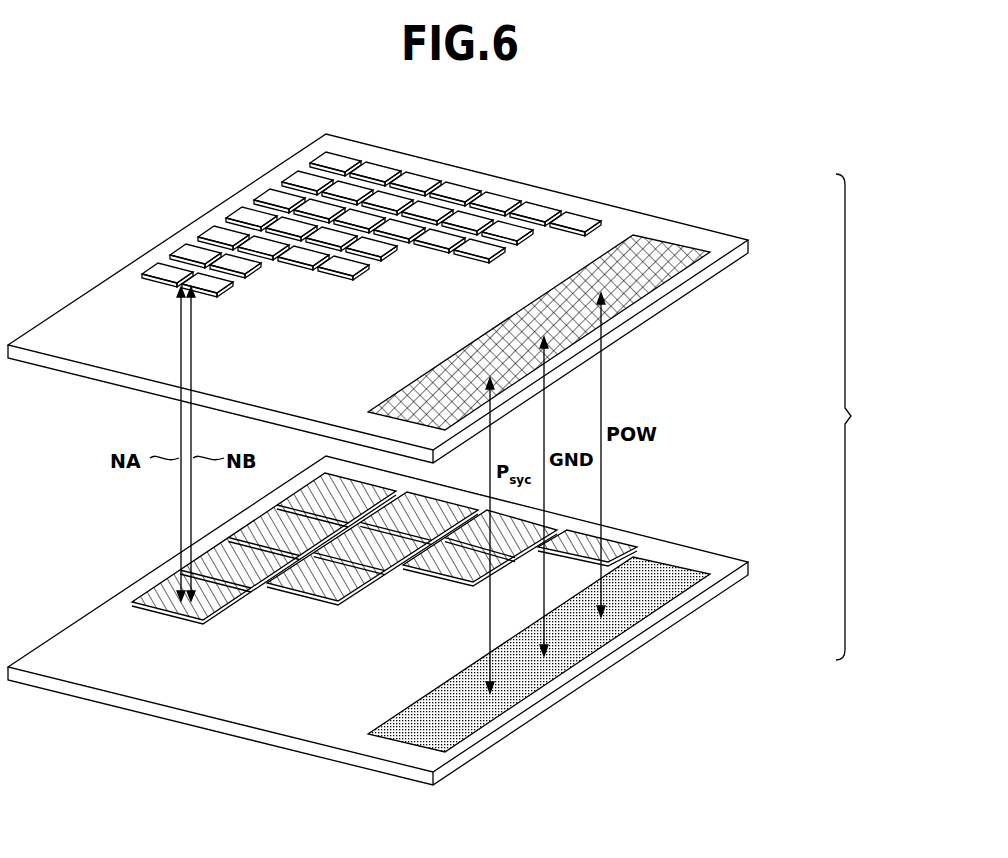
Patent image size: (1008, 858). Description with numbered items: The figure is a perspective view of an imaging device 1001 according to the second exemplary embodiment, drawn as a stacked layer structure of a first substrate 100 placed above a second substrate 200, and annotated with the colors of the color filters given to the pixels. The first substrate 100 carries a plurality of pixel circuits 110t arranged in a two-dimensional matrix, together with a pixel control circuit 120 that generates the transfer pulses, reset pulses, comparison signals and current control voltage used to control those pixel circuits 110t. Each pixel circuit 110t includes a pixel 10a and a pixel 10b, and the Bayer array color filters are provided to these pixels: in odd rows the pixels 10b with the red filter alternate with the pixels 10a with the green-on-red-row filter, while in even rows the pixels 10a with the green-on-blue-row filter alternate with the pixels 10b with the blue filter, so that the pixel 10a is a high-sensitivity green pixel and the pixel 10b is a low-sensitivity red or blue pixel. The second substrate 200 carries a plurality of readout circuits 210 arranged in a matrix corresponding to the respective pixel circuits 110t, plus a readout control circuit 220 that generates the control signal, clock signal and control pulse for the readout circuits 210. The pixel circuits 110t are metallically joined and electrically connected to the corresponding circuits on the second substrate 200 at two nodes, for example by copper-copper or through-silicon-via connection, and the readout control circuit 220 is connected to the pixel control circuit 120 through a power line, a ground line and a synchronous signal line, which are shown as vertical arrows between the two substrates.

The first substrate 100 is at (748, 241).
The pixel circuits 110t is at (342, 239).
The pixel 10a is at (150, 270).
The pixel 10b is at (181, 246).
The pixel control circuit 120 is at (637, 297).
The second substrate 200 is at (748, 563).
The readout circuits 210 is at (143, 588).
The readout control circuit 220 is at (576, 664).
The imaging device 1001 is at (877, 417).